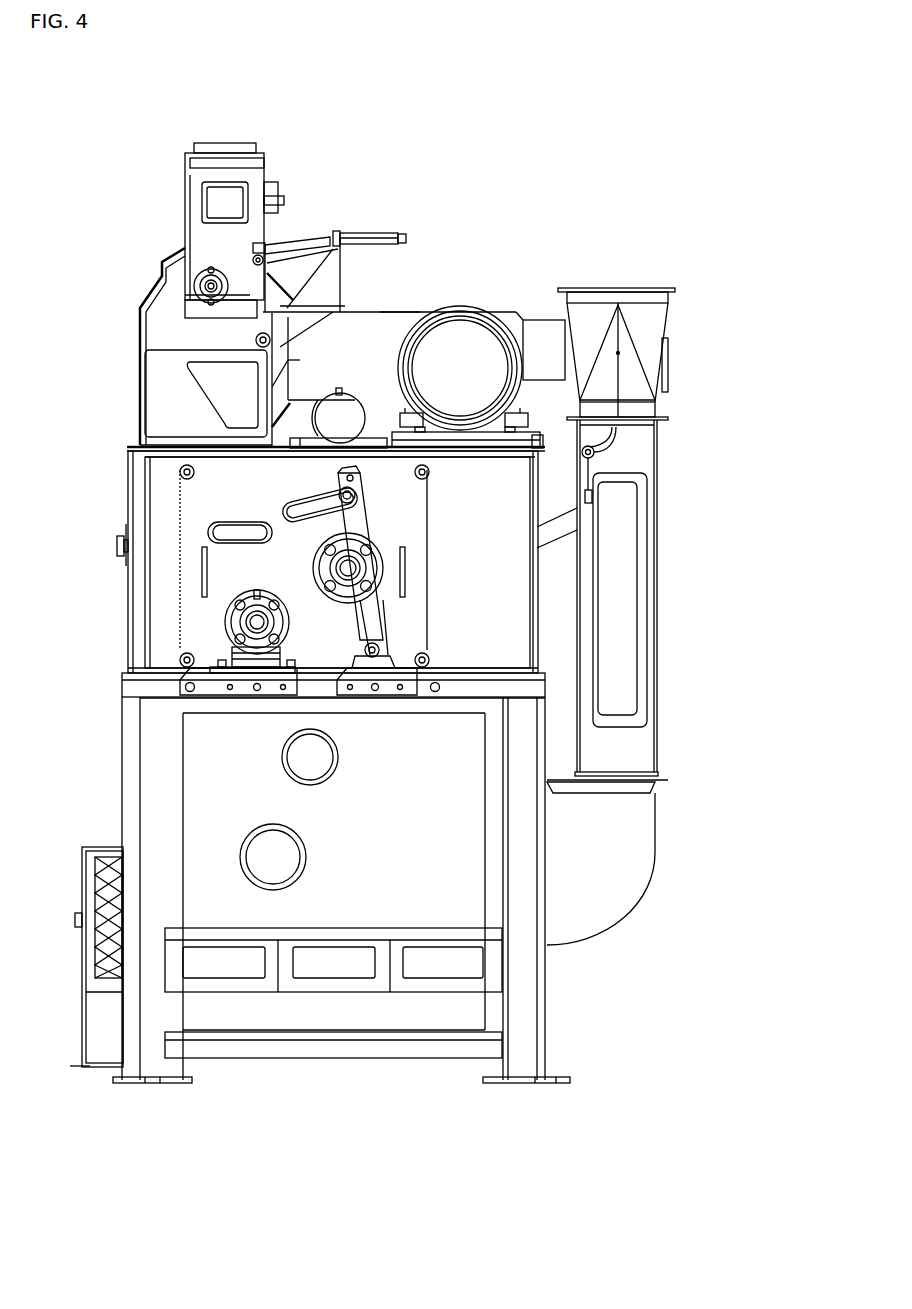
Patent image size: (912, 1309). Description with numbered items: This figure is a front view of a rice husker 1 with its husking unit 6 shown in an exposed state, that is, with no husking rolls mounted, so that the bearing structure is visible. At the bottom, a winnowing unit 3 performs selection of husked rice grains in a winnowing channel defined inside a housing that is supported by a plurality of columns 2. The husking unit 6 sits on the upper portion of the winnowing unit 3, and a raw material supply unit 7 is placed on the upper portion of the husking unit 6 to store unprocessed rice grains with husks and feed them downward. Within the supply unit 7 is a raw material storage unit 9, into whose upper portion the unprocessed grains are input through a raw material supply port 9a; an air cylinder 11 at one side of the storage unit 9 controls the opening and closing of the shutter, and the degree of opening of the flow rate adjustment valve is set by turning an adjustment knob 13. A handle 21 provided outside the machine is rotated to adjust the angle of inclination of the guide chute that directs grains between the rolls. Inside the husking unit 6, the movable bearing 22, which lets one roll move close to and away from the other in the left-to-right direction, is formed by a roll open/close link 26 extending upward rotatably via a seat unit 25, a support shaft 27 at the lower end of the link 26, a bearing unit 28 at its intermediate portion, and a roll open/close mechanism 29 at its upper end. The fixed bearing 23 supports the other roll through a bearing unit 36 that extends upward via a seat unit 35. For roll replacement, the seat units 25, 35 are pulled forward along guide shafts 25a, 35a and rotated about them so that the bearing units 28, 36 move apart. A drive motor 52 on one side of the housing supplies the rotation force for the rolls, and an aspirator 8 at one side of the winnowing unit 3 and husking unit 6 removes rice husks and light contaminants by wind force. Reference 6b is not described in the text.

The rice husker 1 is at (390, 158).
The columns 2 is at (163, 1085).
The winnowing unit 3 is at (120, 772).
The husking unit 6 is at (126, 500).
The side plate 6b is at (200, 490).
The raw material supply unit 7 is at (158, 261).
The aspirator 8 is at (664, 504).
The raw material storage unit 9 is at (185, 163).
The raw material supply port 9a is at (222, 143).
The air cylinder 11 is at (390, 236).
The adjustment knob 13 is at (262, 258).
The handle 21 is at (117, 545).
The movable bearing 22 is at (398, 536).
The fixed bearing 23 is at (210, 619).
The seat unit 25 is at (392, 695).
The guide shaft 25a is at (435, 692).
The roll open/close link 26 is at (382, 618).
The support shaft 27 is at (385, 652).
The bearing unit 28 is at (378, 569).
The roll open/close mechanism 29 is at (374, 497).
The seat unit 35 is at (257, 695).
The guide shaft 35a is at (184, 688).
The bearing unit 36 is at (226, 634).
The drive motor 52 is at (468, 328).